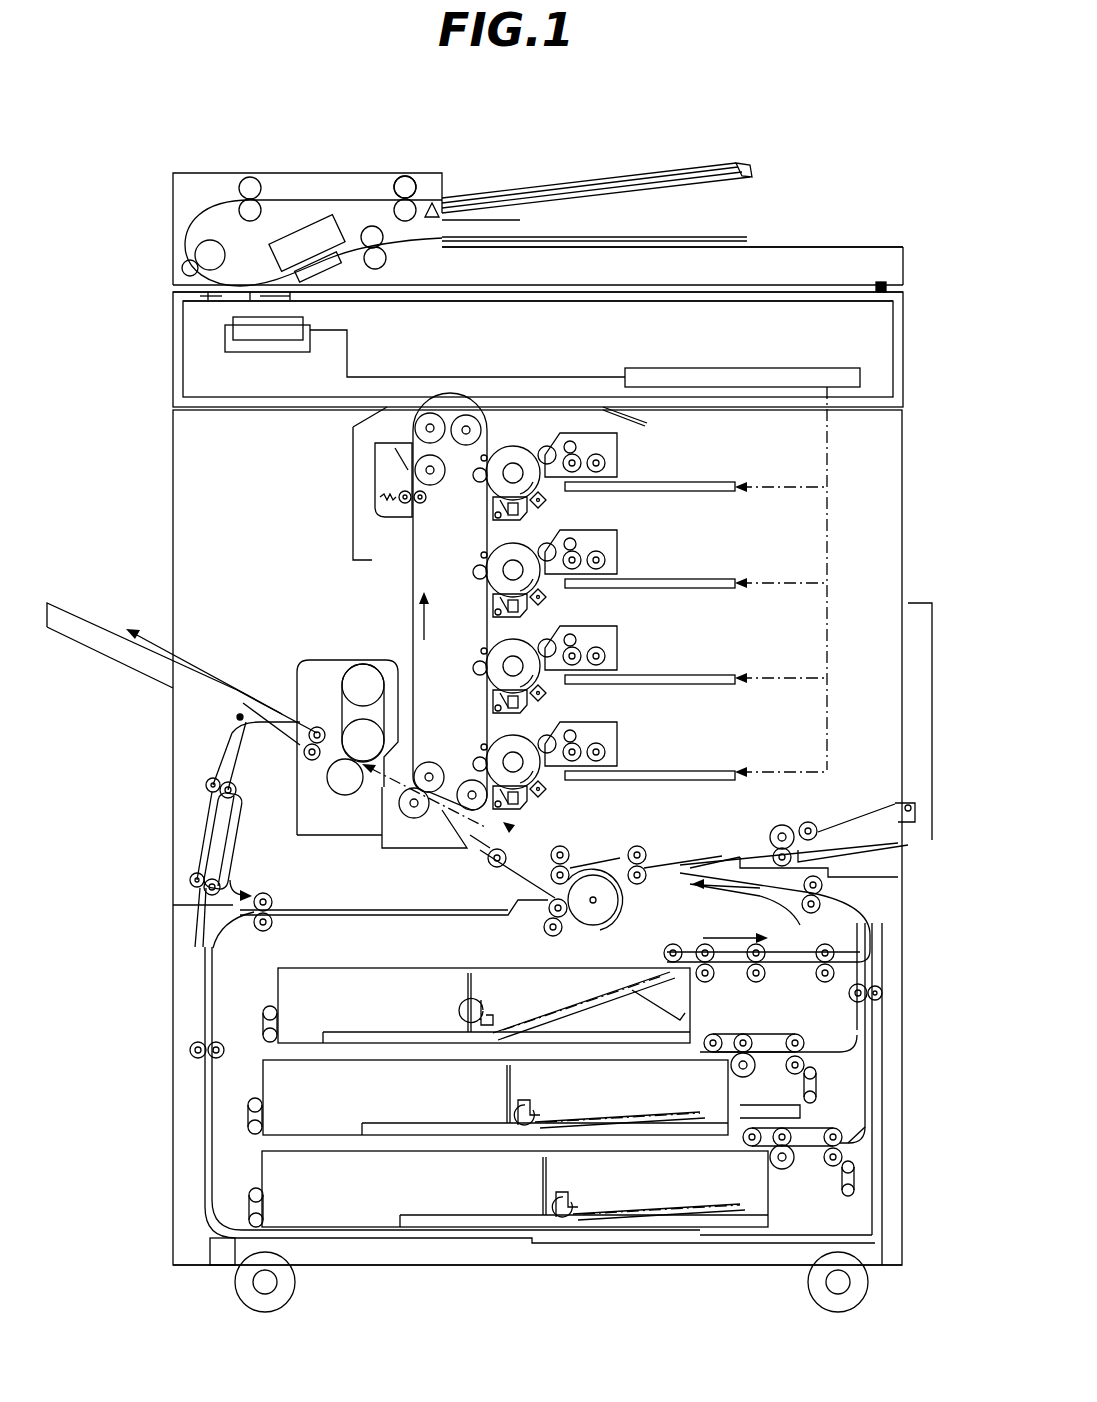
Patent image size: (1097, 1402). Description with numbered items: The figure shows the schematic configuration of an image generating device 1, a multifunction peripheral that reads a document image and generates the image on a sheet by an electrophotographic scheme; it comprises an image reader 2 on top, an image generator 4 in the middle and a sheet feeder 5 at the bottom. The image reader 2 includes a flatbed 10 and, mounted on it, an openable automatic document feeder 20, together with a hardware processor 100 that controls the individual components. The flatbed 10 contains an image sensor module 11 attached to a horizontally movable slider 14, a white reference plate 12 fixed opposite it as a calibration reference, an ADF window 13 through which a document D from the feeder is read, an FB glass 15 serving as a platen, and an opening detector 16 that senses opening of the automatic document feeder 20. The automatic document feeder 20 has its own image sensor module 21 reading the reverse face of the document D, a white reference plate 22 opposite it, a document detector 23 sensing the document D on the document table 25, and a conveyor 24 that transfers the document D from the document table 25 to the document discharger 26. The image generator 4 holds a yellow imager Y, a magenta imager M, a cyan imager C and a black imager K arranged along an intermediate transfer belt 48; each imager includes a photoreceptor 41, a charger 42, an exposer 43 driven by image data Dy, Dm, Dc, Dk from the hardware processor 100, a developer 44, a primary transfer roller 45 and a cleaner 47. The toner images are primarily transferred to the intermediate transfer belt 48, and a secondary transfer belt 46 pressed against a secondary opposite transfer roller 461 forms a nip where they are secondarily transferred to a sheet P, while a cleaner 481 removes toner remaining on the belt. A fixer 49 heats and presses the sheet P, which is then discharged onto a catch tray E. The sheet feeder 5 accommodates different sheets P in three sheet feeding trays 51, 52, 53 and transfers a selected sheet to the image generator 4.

The image generating device 1 is at (848, 110).
The image reader 2 is at (822, 183).
The image generator 4 is at (904, 578).
The sheet feeder 5 is at (905, 950).
The flatbed 10 is at (905, 375).
The image sensor module 11 is at (286, 346).
The white reference plate 12 is at (290, 301).
The ADF window 13 is at (222, 300).
The slider 14 is at (255, 354).
The FB glass 15 is at (795, 302).
The opening detector 16 is at (888, 289).
The automatic document feeder 20 is at (170, 223).
The image sensor module 21 is at (310, 226).
The white reference plate 22 is at (338, 268).
The document detector 23 is at (430, 202).
The conveyor 24 is at (398, 182).
The document table 25 is at (752, 173).
The document discharger 26 is at (775, 247).
The photoreceptor 41 is at (512, 448).
The charger 42 is at (545, 505).
The exposer 43 is at (666, 483).
The developer 44 is at (563, 446).
The primary transfer roller 45 is at (478, 483).
The secondary transfer belt 46 is at (411, 815).
The cleaner 47 is at (491, 516).
The intermediate transfer belt 48 is at (412, 607).
The fixer 49 is at (337, 659).
The sheet feeding tray 51 is at (300, 997).
The sheet feeding tray 52 is at (285, 1095).
The sheet feeding tray 53 is at (285, 1185).
The hardware processor 100 is at (703, 368).
The secondary opposite transfer roller 461 is at (431, 764).
The cleaner 481 is at (375, 478).
The document D is at (600, 180).
The catch tray E is at (80, 612).
The sheet P is at (595, 993).
The yellow imager Y is at (624, 446).
The magenta imager M is at (650, 545).
The cyan imager C is at (652, 639).
The black imager K is at (652, 733).
The image data Dy is at (767, 490).
The magenta toner supply Dm is at (764, 586).
The cyan toner supply Dc is at (764, 681).
The black toner supply Dk is at (764, 775).